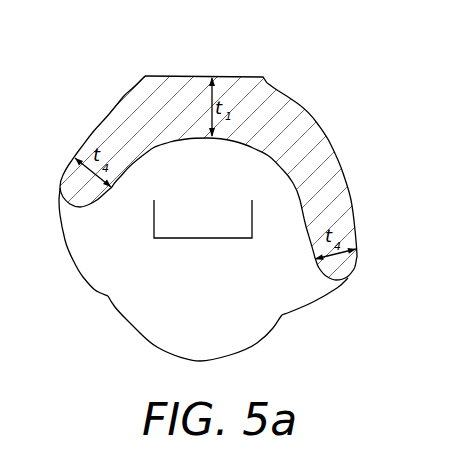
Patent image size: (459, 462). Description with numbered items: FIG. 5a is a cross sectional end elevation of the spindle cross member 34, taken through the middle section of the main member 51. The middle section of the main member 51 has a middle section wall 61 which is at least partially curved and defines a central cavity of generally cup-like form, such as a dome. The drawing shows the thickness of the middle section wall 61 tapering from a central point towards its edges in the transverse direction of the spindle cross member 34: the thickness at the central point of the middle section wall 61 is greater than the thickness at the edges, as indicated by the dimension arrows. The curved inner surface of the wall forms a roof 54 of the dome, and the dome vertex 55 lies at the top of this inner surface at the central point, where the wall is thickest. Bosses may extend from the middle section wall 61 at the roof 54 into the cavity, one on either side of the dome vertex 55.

The spindle cross member 34 is at (103, 65).
The main member 51 is at (245, 77).
The roof 54 is at (160, 150).
The dome vertex 55 is at (212, 140).
The middle section wall 61 is at (81, 148).